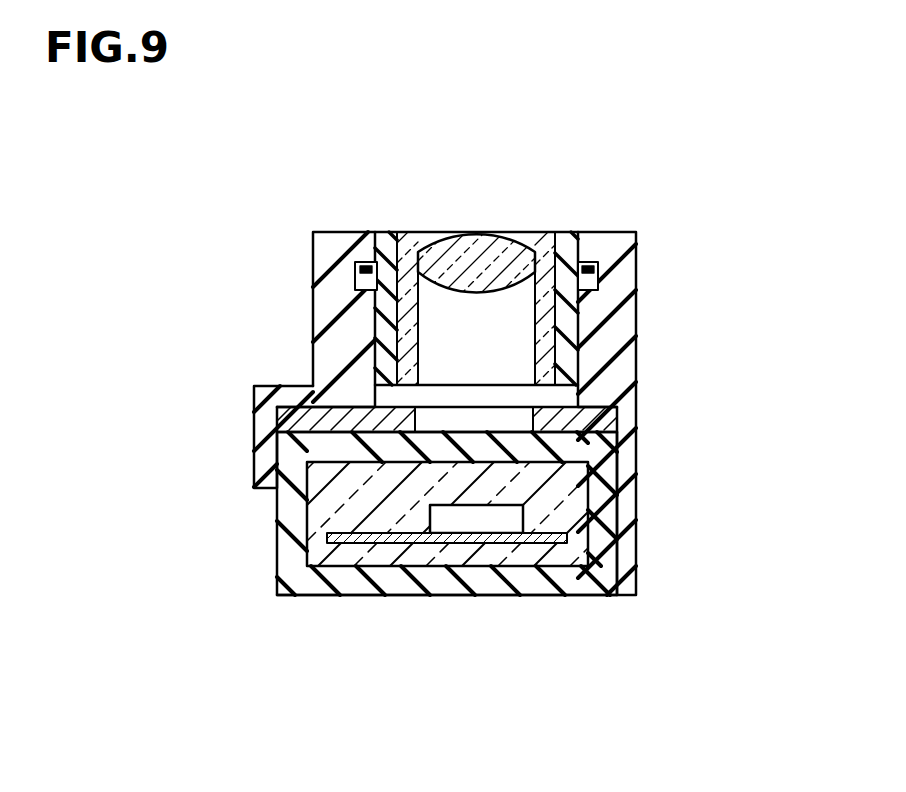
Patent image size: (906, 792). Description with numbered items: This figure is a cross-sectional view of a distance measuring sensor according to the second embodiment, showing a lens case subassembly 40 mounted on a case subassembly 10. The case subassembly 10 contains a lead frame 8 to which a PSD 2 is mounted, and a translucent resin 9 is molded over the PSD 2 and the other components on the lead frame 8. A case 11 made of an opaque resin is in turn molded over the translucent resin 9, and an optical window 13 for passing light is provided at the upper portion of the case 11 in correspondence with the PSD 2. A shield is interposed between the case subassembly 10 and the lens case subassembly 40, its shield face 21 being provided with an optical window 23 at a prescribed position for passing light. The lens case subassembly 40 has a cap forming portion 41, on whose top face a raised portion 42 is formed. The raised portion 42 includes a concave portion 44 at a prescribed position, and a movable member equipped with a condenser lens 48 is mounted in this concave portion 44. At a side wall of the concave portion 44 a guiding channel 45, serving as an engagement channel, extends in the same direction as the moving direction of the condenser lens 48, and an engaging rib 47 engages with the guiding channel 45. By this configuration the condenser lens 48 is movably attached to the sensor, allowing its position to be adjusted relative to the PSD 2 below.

The PSD 2 is at (472, 520).
The lead frame 8 is at (545, 541).
The translucent resin 9 is at (557, 489).
The case subassembly 10 is at (446, 562).
The case 11 is at (328, 583).
The optical window 13 is at (503, 447).
The shield face 21 is at (290, 418).
The optical window 23 is at (503, 417).
The lens case subassembly 40 is at (463, 379).
The cap forming portion 41 is at (265, 465).
The raised portion 42 is at (333, 353).
The concave portion 44 is at (487, 357).
The guiding channel 45 is at (355, 283).
The engaging rib 47 is at (337, 320).
The condenser lens 48 is at (477, 247).